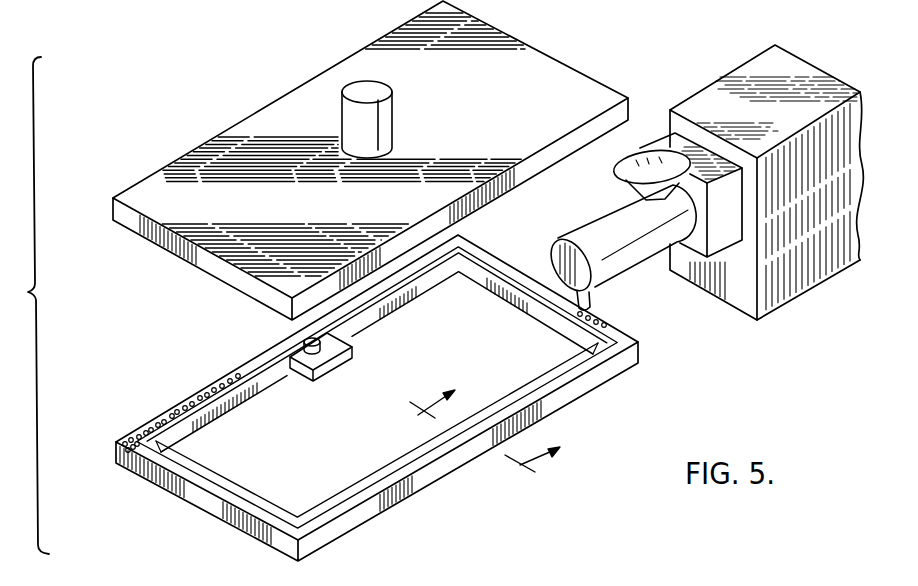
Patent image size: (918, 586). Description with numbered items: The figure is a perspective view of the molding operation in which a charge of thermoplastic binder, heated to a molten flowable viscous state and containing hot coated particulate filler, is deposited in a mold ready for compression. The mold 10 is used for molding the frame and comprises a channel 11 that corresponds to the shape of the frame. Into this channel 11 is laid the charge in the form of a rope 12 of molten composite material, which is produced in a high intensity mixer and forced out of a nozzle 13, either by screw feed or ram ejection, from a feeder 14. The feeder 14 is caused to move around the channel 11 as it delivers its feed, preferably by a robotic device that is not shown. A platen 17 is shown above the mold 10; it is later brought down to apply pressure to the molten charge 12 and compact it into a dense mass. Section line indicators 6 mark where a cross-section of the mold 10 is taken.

The section line 6- 6 is at (485, 446).
The mold 10 is at (427, 473).
The channel 11 is at (195, 473).
The rope of molten composite material 12 is at (162, 413).
The nozzle 13 is at (606, 293).
The feeder 14 is at (707, 103).
The platen 17 is at (158, 185).